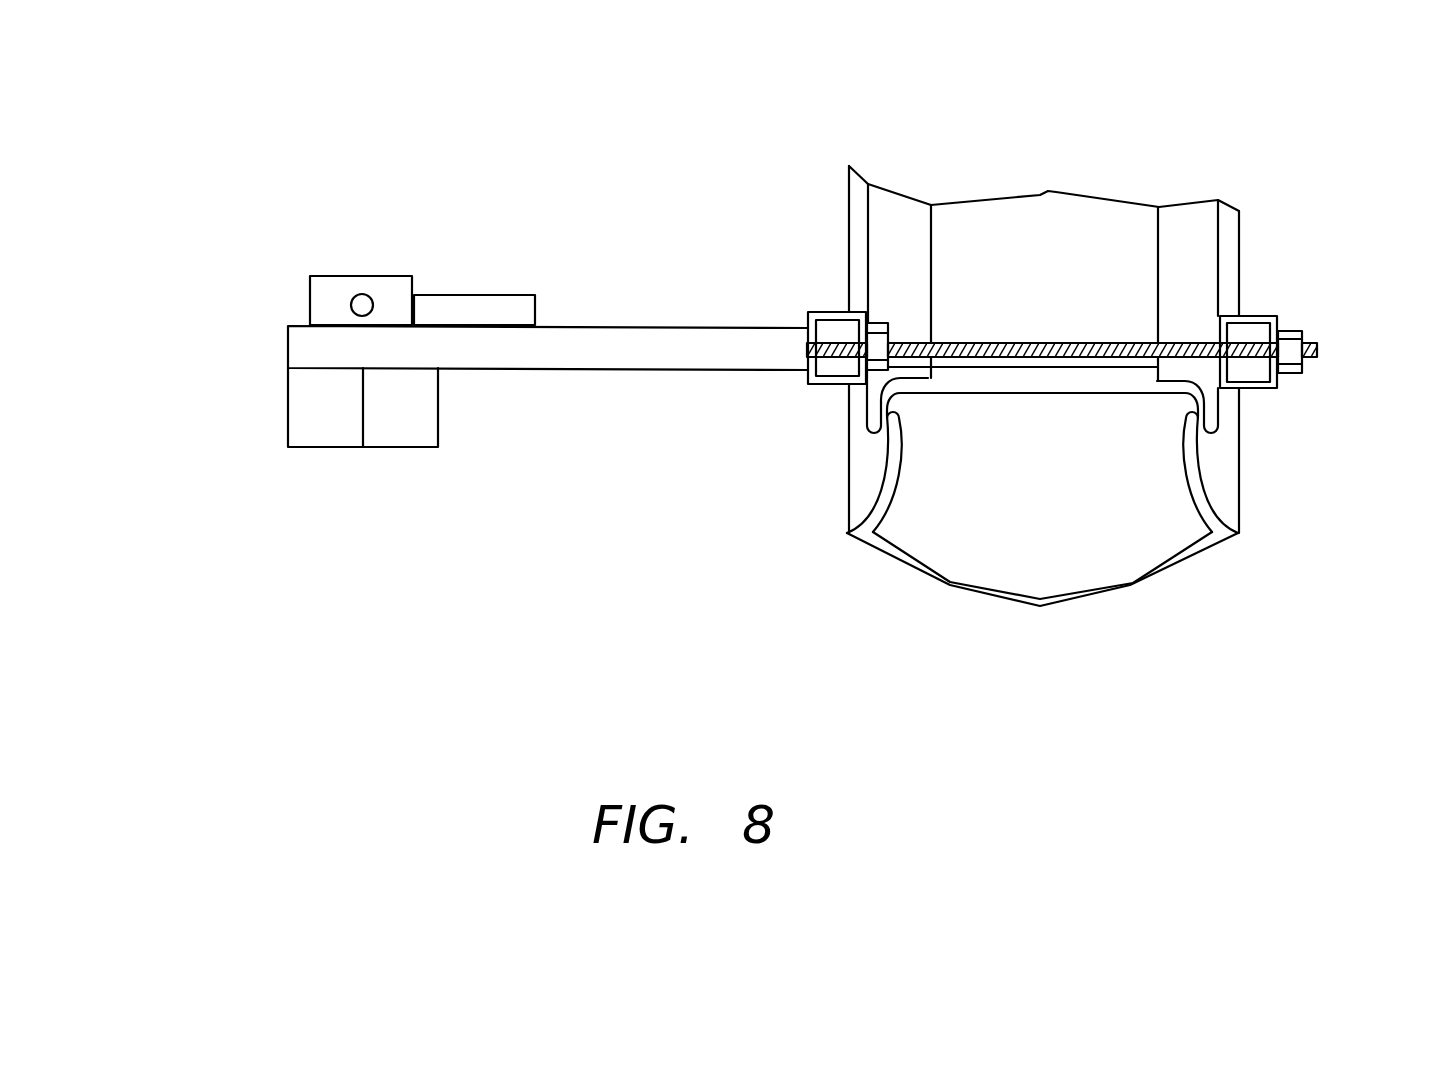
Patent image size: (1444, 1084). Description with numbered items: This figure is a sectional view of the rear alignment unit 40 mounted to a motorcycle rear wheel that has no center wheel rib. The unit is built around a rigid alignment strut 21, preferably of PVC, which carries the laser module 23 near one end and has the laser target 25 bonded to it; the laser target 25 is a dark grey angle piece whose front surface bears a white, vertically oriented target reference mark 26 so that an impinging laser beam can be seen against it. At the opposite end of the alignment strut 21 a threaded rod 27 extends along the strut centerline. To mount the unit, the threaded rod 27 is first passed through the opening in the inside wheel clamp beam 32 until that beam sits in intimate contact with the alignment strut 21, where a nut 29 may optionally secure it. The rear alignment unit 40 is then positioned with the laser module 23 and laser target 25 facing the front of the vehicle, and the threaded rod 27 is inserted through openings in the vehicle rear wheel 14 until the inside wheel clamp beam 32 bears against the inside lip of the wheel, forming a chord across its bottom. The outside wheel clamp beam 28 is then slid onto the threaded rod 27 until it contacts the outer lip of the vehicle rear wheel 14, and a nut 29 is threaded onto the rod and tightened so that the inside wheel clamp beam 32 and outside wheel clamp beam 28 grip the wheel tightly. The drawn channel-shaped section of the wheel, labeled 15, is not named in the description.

The vehicle rear wheel 14 is at (1073, 198).
The channel 15 is at (1087, 599).
The alignment strut 21 is at (627, 327).
The laser module 23 is at (358, 293).
The laser target 25 is at (398, 448).
The target reference mark 26 is at (362, 448).
The threaded rod 27 is at (1027, 357).
The outside wheel clamp beam 28 is at (1258, 313).
The nut 29 is at (878, 323).
The inside wheel clamp beam 32 is at (825, 313).
The rear alignment unit 40 is at (237, 618).